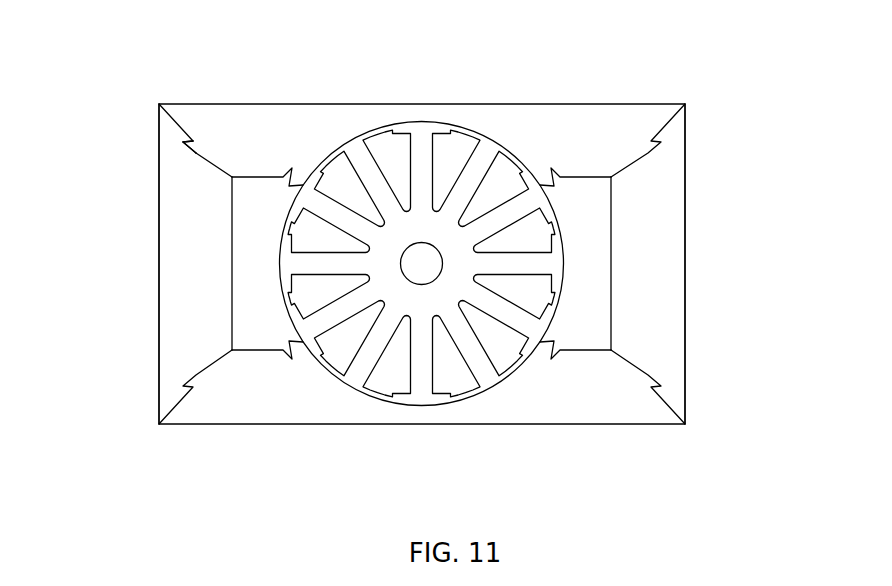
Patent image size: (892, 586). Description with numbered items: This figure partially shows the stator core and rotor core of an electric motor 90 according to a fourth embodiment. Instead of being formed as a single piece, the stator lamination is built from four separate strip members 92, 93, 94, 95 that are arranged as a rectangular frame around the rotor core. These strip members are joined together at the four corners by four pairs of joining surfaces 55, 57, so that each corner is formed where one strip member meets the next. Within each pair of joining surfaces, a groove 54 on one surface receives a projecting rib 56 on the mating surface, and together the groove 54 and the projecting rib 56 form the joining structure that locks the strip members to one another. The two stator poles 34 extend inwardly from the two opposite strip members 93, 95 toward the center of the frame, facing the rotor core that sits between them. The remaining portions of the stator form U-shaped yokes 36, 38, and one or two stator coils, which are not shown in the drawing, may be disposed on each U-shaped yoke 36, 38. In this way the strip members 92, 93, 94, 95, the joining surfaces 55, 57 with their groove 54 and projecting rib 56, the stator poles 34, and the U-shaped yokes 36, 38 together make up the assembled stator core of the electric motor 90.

The stator poles 34 is at (417, 113).
The U-shaped yoke 36 is at (667, 322).
The U-shaped yoke 38 is at (176, 326).
The groove 54 is at (187, 145).
The joining surface 55 is at (192, 148).
The projecting rib 56 is at (196, 138).
The joining surface 57 is at (203, 150).
The electric motor 90 is at (692, 450).
The strip member 92 is at (178, 268).
The strip member 93 is at (540, 128).
The strip member 94 is at (660, 266).
The strip member 95 is at (590, 405).